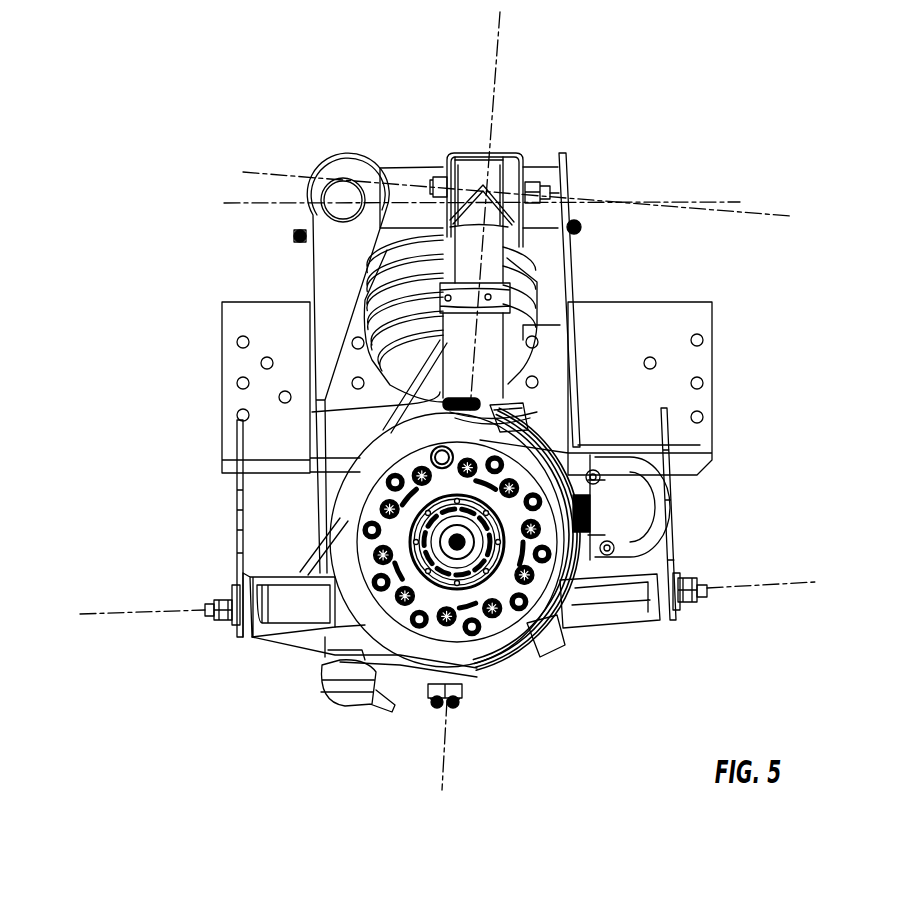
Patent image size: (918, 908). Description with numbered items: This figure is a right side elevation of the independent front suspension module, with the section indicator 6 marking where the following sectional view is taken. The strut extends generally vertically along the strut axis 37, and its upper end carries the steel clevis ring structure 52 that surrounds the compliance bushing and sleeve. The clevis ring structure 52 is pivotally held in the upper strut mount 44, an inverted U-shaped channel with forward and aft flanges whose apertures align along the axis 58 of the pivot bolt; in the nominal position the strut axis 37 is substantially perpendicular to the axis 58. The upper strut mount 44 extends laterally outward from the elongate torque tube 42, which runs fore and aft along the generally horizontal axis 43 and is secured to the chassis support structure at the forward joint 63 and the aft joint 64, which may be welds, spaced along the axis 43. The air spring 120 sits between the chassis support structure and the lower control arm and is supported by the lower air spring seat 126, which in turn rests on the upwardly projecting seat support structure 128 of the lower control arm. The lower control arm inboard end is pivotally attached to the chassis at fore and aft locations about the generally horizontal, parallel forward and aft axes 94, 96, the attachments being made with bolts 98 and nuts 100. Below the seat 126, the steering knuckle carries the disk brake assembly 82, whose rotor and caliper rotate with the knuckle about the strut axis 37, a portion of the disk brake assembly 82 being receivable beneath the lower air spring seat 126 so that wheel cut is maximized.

The strut axis 37 is at (500, 62).
The section line 6- 6 is at (493, 98).
The axis 58 is at (256, 172).
The horizontal axis 43 is at (240, 205).
The torque tube 42 is at (402, 167).
The aft joint 64 is at (335, 235).
The upper strut mount 44 is at (445, 150).
The clevis ring structure 52 is at (503, 172).
The forward joint 63 is at (566, 167).
The air spring 120 is at (510, 278).
The lower air spring seat 126 is at (400, 363).
The seat support structure 128 is at (312, 410).
The disk brake assembly 82 is at (560, 665).
The bolt 98 is at (213, 608).
The nut 100 is at (232, 622).
The aft axis 96 is at (115, 615).
The forward axis 94 is at (775, 588).